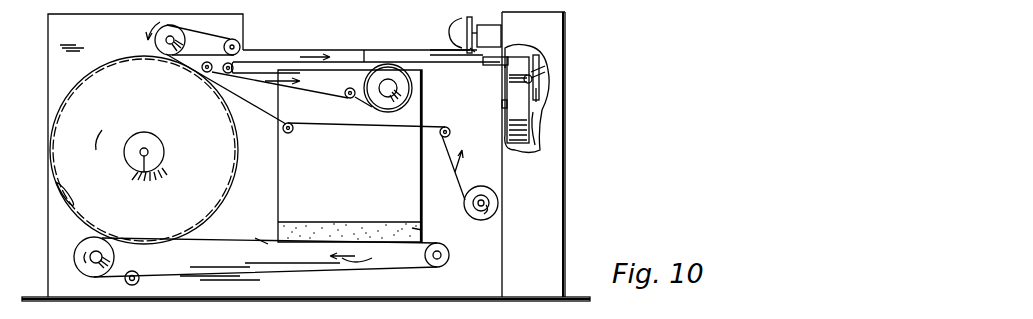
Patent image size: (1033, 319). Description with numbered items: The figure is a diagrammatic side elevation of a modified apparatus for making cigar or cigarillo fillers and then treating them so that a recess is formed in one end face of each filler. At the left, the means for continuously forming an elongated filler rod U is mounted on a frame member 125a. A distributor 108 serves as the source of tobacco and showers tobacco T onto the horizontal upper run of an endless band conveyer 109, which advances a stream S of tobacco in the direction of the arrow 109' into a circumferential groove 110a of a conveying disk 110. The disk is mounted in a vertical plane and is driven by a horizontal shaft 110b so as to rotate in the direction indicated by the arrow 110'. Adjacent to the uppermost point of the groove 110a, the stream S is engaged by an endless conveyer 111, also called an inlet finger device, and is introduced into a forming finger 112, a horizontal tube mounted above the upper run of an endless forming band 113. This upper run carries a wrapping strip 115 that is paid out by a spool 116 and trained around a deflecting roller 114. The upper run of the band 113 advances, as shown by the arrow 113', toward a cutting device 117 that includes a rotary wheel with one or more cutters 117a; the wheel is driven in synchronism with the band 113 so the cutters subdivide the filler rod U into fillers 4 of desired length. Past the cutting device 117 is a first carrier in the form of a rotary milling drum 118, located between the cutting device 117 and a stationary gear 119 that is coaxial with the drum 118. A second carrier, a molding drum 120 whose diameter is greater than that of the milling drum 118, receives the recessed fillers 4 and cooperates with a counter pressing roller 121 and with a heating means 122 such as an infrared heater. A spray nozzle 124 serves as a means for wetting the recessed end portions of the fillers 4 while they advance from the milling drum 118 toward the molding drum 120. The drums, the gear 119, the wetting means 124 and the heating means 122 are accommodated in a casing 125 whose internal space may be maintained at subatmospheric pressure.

The fillers 4 is at (505, 66).
The distributor 108 is at (362, 210).
The endless band conveyer 109 is at (273, 266).
The arrow 109' is at (338, 255).
The conveying disk 110 is at (119, 150).
The arrow 110' is at (105, 119).
The circumferential groove 110a is at (60, 200).
The horizontal shaft 110b is at (147, 182).
The endless conveyer 111 is at (156, 49).
The forming finger 112 is at (247, 58).
The endless forming band 113 is at (312, 97).
The arrow 113' is at (366, 42).
The deflecting roller 114 is at (205, 73).
The wrapping strip 115 is at (333, 133).
The spool 116 is at (497, 200).
The cutting device 117 is at (490, 44).
The cutters 117a is at (470, 47).
The milling drum 118 is at (520, 64).
The stationary gear 119 is at (538, 96).
The molding drum 120 is at (506, 96).
The counter pressing roller 121 is at (521, 80).
The heating means 122 is at (531, 82).
The spray nozzle 124 is at (536, 146).
The casing 125 is at (572, 162).
The frame member 125a is at (48, 68).
The stream of tobacco S is at (262, 243).
The tobacco T is at (414, 230).
The filler rod U is at (365, 52).